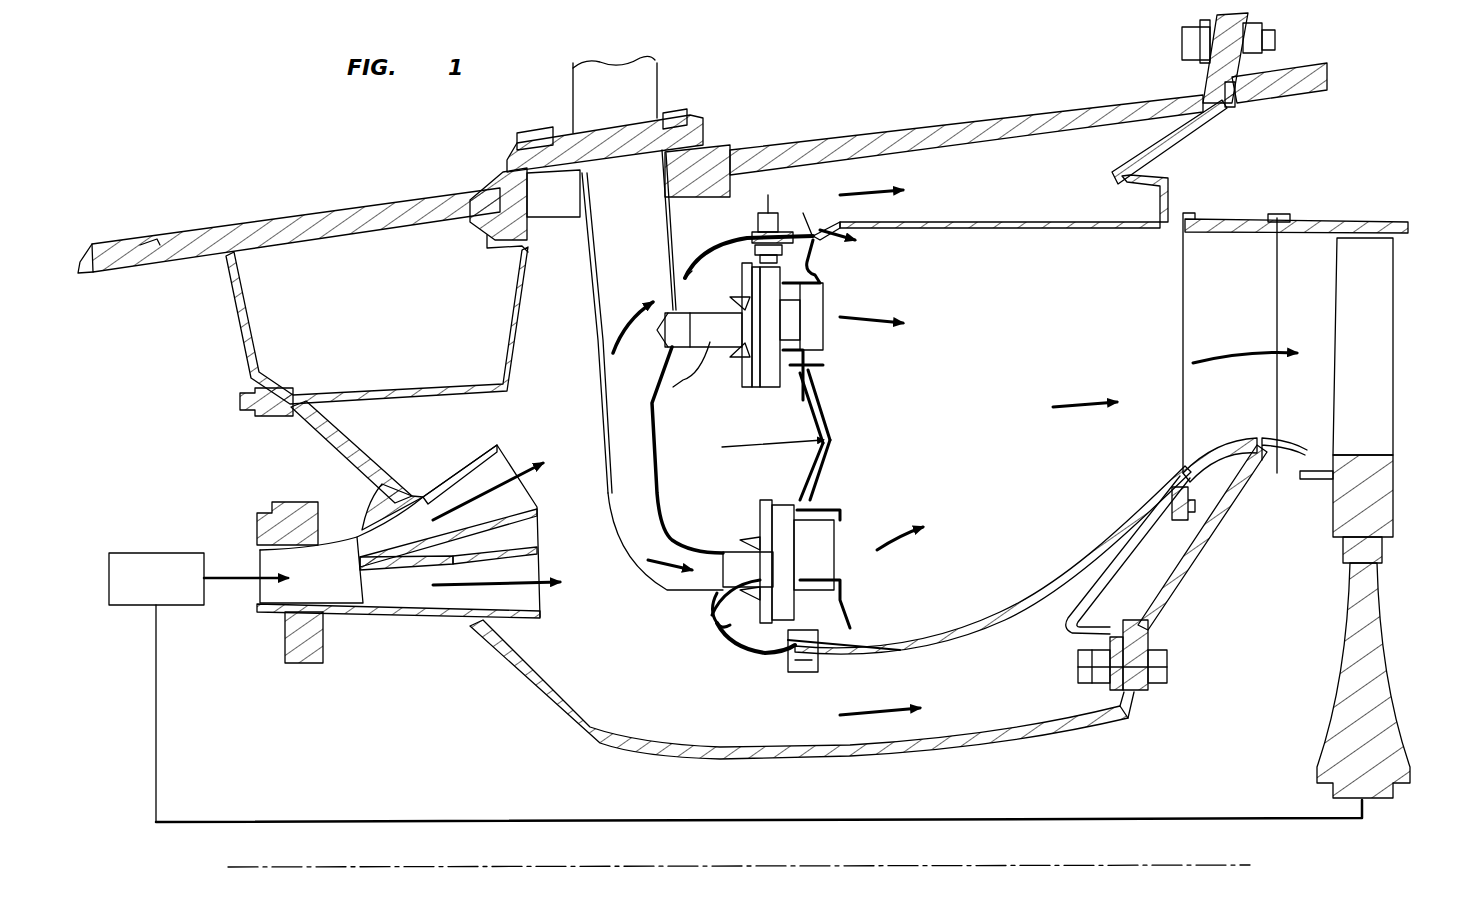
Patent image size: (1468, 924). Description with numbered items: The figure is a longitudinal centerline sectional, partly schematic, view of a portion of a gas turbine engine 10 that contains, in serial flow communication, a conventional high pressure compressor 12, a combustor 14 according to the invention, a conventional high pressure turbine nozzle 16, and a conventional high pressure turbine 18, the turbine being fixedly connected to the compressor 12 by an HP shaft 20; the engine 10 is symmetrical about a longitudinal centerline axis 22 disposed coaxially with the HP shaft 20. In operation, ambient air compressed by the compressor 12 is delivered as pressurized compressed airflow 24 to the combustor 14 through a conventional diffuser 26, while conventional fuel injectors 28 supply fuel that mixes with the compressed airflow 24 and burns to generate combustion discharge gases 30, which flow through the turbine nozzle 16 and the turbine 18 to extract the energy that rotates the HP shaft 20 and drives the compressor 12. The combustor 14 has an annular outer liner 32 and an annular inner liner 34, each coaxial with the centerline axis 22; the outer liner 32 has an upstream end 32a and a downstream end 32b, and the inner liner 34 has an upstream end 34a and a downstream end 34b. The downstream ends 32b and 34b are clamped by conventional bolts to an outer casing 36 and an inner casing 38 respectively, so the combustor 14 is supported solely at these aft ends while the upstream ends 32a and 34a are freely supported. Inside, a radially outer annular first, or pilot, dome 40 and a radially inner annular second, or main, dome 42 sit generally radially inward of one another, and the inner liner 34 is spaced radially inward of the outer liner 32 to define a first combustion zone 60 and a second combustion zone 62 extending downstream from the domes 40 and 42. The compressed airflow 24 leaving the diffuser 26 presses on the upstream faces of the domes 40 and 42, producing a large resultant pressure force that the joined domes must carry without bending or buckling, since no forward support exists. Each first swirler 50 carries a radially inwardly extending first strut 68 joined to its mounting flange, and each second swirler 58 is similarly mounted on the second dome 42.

The gas turbine engine 10 is at (775, 140).
The high pressure compressor 12 is at (174, 593).
The combustor 14 is at (1027, 203).
The high pressure turbine nozzle 16 is at (1235, 222).
The high pressure turbine 18 is at (1390, 347).
The HP shaft 20 is at (1220, 817).
The longitudinal centerline axis 22 is at (1120, 866).
The compressed airflow 24 is at (520, 460).
The diffuser 26 is at (430, 615).
The fuel injectors 28 is at (672, 383).
The combustion discharge gases 30 is at (867, 315).
The outer liner 32 is at (950, 218).
The outer liner upstream end 32a is at (803, 213).
The outer liner downstream end 32b is at (1170, 230).
The inner liner 34 is at (1127, 520).
The inner liner upstream end 34a is at (853, 650).
The inner liner downstream end 34b is at (1173, 473).
The outer casing 36 is at (843, 142).
The inner casing 38 is at (1038, 728).
The first dome 40 is at (833, 403).
The second dome 42 is at (840, 473).
The first swirlers 50 is at (827, 357).
The second swirlers 58 is at (847, 573).
The first combustion zone 60 is at (1005, 333).
The second combustion zone 62 is at (985, 543).
The first strut 68 is at (790, 448).